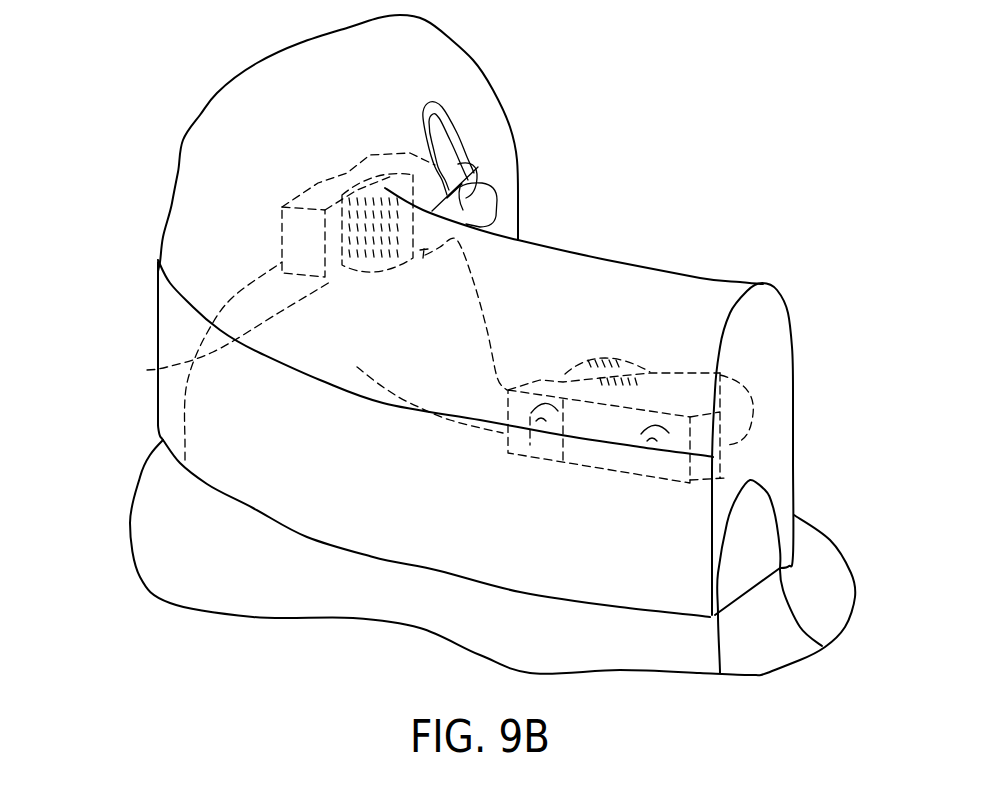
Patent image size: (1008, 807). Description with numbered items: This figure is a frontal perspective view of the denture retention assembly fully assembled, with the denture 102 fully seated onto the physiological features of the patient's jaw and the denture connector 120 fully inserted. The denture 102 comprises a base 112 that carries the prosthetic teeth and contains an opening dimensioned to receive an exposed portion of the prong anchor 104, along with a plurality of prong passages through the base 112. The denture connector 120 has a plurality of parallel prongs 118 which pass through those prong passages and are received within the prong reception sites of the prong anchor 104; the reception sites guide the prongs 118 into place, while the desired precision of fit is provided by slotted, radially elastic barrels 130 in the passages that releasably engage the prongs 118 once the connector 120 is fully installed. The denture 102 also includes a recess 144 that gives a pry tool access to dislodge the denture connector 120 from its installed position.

The denture 102 is at (132, 241).
The prong anchor 104 is at (318, 137).
The base 112 is at (310, 584).
The prong 118 is at (640, 466).
The denture connector 120 is at (528, 195).
The barrel 130 is at (147, 370).
The recess 144 is at (440, 115).